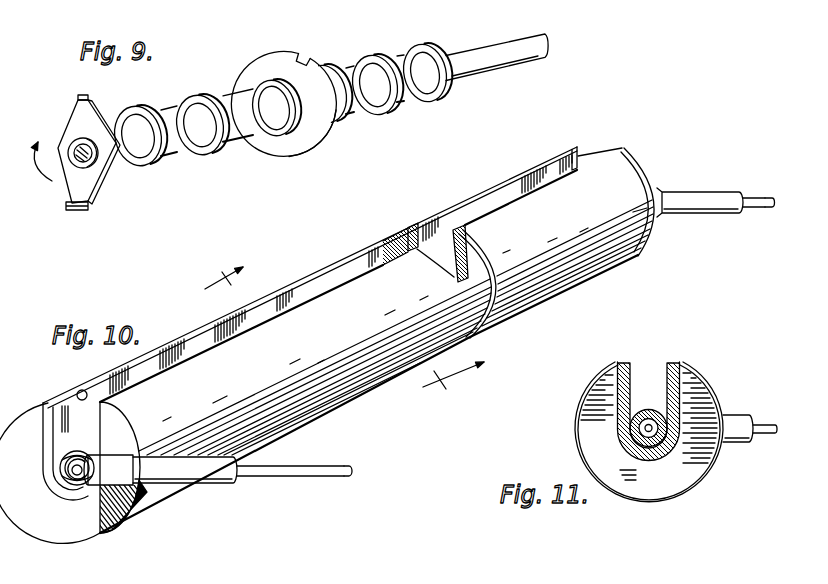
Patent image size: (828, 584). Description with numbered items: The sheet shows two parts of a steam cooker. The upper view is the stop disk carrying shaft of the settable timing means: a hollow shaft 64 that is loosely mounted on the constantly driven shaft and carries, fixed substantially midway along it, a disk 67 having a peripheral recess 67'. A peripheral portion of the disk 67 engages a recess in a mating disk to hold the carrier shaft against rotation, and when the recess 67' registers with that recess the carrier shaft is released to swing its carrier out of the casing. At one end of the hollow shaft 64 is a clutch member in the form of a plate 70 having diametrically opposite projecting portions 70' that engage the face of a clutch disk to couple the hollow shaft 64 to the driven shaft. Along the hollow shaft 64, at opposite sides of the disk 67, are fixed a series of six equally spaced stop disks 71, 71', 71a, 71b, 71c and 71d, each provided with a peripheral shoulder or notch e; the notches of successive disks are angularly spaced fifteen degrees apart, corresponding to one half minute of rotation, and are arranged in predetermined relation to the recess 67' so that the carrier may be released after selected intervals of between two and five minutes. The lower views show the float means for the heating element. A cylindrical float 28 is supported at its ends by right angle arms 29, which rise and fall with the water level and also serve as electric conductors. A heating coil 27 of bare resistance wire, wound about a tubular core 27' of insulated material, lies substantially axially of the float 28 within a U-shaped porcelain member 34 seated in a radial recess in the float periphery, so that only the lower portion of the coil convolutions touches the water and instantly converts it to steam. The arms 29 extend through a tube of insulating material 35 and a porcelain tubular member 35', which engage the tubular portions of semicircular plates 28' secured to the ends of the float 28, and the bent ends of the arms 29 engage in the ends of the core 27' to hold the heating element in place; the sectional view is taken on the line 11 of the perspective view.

In FIG. 10, the section line 11 is at (351, 317).
In FIG. 10, the heating element 27 is at (77, 445).
In FIG. 11, the heating element 27 is at (647, 395).
In FIG. 10, the tubular core 27' is at (48, 476).
In FIG. 11, the tubular core 27' is at (663, 475).
In FIG. 10, the cylindrical float 28 is at (327, 345).
In FIG. 11, the cylindrical float 28 is at (625, 432).
In FIG. 10, the plates 28' is at (120, 517).
In FIG. 10, the arms 29 is at (77, 481).
In FIG. 11, the arms 29 is at (770, 424).
In FIG. 10, the U-shaped member 34 is at (86, 392).
In FIG. 11, the U-shaped member 34 is at (667, 378).
In FIG. 10, the tube of insulating material 35 is at (501, 359).
In FIG. 11, the tube of insulating material 35 is at (742, 458).
In FIG. 10, the tubular member 35' is at (413, 343).
In FIG. 9, the hollow shaft 64 is at (492, 68).
In FIG. 9, the disk 67 is at (283, 87).
In FIG. 9, the peripheral recess 67' is at (316, 41).
In FIG. 9, the plate 70 is at (80, 154).
In FIG. 9, the projecting portions 70' is at (54, 158).
In FIG. 9, the stop disk 71 is at (141, 126).
In FIG. 9, the stop disk 71' is at (203, 115).
In FIG. 9, the stop disk 71a is at (262, 135).
In FIG. 9, the stop disk 71b is at (348, 108).
In FIG. 9, the stop disk 71c is at (365, 65).
In FIG. 9, the stop disk 71d is at (423, 50).
In FIG. 9, the peripheral shoulder or notch e is at (152, 105).